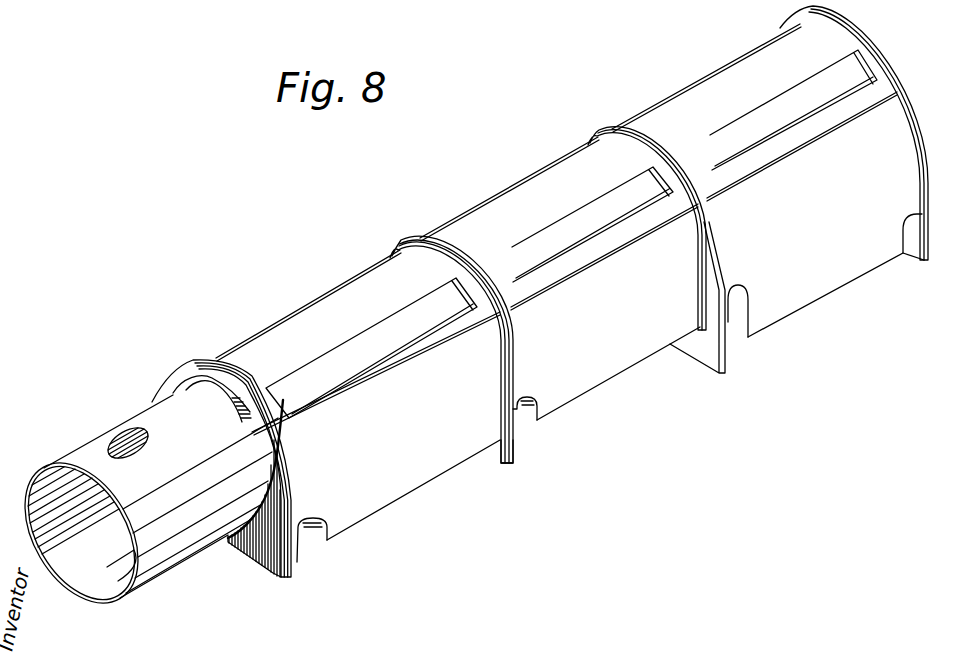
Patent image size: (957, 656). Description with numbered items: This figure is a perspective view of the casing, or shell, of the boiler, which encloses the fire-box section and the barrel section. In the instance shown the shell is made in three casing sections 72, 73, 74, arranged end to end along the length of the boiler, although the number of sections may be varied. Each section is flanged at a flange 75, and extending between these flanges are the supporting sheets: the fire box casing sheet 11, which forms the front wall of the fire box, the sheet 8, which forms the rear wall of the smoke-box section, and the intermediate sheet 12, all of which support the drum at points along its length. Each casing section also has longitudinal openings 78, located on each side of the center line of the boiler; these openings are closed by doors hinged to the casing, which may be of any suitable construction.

The sheet 8 is at (281, 570).
The fire box casing sheet 11 is at (703, 356).
The intermediate sheet 12 is at (503, 453).
The casing section 72 is at (770, 171).
The casing section 73 is at (560, 278).
The casing section 74 is at (336, 406).
The flange 75 is at (500, 353).
The longitudinal opening 78 is at (354, 314).